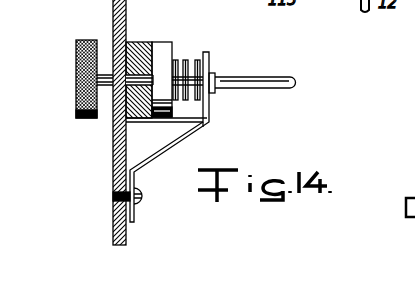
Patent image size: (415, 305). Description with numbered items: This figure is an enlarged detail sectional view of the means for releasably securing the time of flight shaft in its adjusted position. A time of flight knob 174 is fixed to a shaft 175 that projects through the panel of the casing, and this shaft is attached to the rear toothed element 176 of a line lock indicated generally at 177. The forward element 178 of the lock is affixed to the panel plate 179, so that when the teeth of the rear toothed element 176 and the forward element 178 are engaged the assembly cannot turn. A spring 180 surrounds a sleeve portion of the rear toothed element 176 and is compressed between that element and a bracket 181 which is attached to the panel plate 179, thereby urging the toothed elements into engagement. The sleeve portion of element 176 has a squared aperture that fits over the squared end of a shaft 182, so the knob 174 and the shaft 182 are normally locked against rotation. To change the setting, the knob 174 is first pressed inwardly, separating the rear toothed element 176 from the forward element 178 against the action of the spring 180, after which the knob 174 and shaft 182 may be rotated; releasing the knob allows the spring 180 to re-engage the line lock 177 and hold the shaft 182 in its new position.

The time of flight knob 174 is at (78, 78).
The shaft 175 is at (103, 74).
The rear toothed element 176 is at (163, 45).
The line lock 177 is at (152, 31).
The forward element 178 is at (128, 122).
The panel plate 179 is at (112, 173).
The spring 180 is at (188, 56).
The bracket 181 is at (210, 121).
The shaft 182 is at (277, 79).